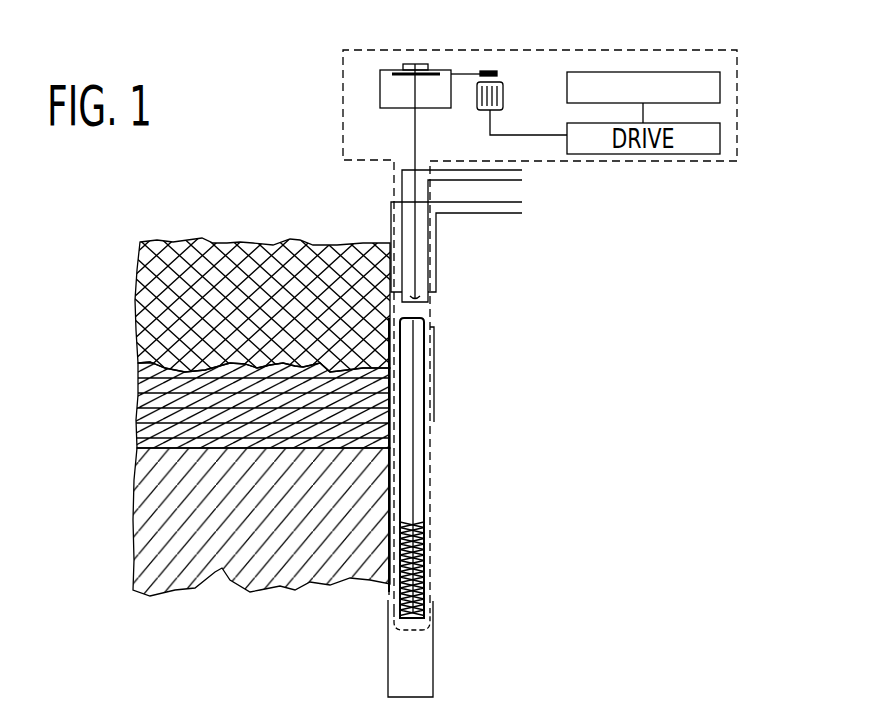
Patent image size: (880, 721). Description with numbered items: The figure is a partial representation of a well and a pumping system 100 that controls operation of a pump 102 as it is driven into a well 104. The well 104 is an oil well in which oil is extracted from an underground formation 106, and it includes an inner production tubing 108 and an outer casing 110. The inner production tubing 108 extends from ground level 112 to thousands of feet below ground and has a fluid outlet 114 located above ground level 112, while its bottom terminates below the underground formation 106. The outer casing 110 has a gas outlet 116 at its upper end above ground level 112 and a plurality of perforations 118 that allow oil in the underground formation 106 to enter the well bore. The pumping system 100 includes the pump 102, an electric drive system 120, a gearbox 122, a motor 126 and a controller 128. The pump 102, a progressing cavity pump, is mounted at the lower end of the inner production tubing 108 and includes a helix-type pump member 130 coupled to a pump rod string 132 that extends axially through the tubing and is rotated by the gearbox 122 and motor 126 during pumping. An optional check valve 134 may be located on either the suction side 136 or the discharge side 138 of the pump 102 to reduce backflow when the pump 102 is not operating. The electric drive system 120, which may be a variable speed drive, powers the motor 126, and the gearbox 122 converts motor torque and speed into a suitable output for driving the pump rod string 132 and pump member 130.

The pumping system 100 is at (673, 286).
The pump 102 is at (315, 661).
The well 104 is at (299, 207).
The underground formation 106 is at (222, 572).
The inner production tubing 108 is at (402, 314).
The outer casing 110 is at (437, 374).
The ground level 112 is at (221, 242).
The fluid outlet 114 is at (523, 173).
The gas outlet 116 is at (523, 210).
The perforations 118 is at (439, 428).
The electric drive system 120 is at (721, 137).
The gearbox 122 is at (414, 64).
The motor 126 is at (508, 94).
The controller 128 is at (722, 88).
The pump member 130 is at (418, 561).
The pump rod string 132 is at (406, 184).
The check valve 134 is at (400, 624).
The suction side 136 is at (439, 634).
The discharge side 138 is at (574, 218).